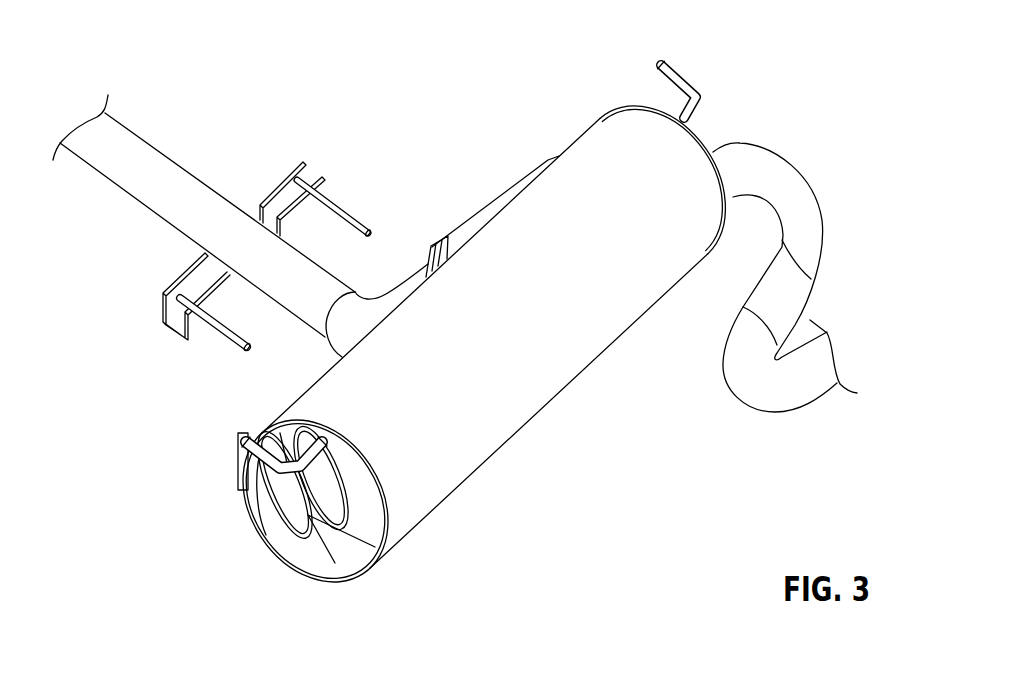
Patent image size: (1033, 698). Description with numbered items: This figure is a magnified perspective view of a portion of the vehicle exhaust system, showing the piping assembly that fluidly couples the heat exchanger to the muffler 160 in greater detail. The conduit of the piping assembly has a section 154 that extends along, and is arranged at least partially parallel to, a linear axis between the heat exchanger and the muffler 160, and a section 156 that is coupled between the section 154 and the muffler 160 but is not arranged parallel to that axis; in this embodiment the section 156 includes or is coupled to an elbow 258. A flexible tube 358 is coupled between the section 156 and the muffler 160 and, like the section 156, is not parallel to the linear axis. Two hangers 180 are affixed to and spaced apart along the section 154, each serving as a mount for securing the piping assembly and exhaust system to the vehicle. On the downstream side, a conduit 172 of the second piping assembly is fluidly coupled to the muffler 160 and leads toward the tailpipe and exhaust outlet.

The section 154 is at (216, 214).
The hanger 180 is at (173, 332).
The elbow 258 is at (355, 307).
The section 156 is at (418, 263).
The flexible tube 358 is at (510, 196).
The muffler 160 is at (583, 153).
The conduit 172 is at (790, 193).